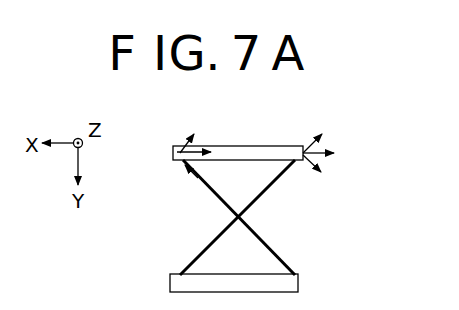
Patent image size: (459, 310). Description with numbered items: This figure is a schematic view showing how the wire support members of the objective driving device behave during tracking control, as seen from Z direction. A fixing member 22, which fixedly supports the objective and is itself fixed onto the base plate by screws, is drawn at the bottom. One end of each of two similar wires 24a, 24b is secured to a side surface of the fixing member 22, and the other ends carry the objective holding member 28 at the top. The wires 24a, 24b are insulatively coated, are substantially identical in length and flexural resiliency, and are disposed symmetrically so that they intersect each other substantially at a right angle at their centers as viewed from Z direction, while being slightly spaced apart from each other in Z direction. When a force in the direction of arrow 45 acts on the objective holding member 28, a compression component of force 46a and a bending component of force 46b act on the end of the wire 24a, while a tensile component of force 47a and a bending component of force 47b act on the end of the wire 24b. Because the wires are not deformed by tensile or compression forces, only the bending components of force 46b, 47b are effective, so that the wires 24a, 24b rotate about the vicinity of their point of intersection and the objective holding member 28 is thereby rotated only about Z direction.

The fixing member 22 is at (299, 281).
The wire 24a is at (286, 254).
The wire 24b is at (206, 246).
The objective holding member 28 is at (268, 146).
The arrow 45 is at (198, 149).
The compression component of force 46a is at (181, 166).
The bending component of force 46b is at (182, 145).
The tensile component of force 47a is at (305, 143).
The bending component of force 47b is at (306, 170).